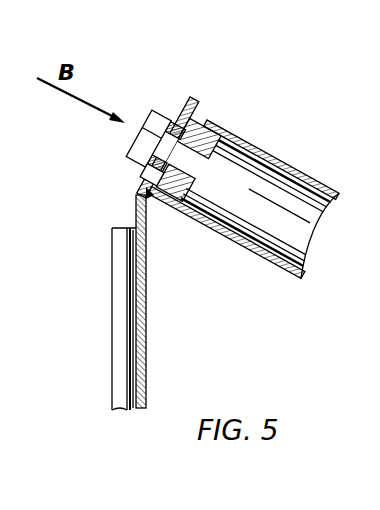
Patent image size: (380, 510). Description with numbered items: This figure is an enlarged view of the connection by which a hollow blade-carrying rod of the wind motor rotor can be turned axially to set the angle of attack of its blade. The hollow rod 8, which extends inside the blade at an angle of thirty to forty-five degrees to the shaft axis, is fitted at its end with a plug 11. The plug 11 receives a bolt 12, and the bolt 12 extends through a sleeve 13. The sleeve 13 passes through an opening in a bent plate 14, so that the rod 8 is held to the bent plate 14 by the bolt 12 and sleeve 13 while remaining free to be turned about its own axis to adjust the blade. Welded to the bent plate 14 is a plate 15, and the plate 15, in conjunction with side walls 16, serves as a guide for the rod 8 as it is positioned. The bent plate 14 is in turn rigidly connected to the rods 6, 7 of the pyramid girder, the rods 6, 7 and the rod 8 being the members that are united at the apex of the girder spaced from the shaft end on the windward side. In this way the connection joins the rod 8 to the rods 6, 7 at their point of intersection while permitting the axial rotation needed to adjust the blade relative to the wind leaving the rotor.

The rod 6 is at (103, 319).
The rod 7 is at (114, 313).
The rod 8 is at (250, 252).
The plug 11 is at (208, 123).
The bolt 12 is at (134, 150).
The sleeve 13 is at (144, 163).
The bent plate 14 is at (185, 106).
The plate 15 is at (205, 230).
The side walls 16 is at (200, 122).